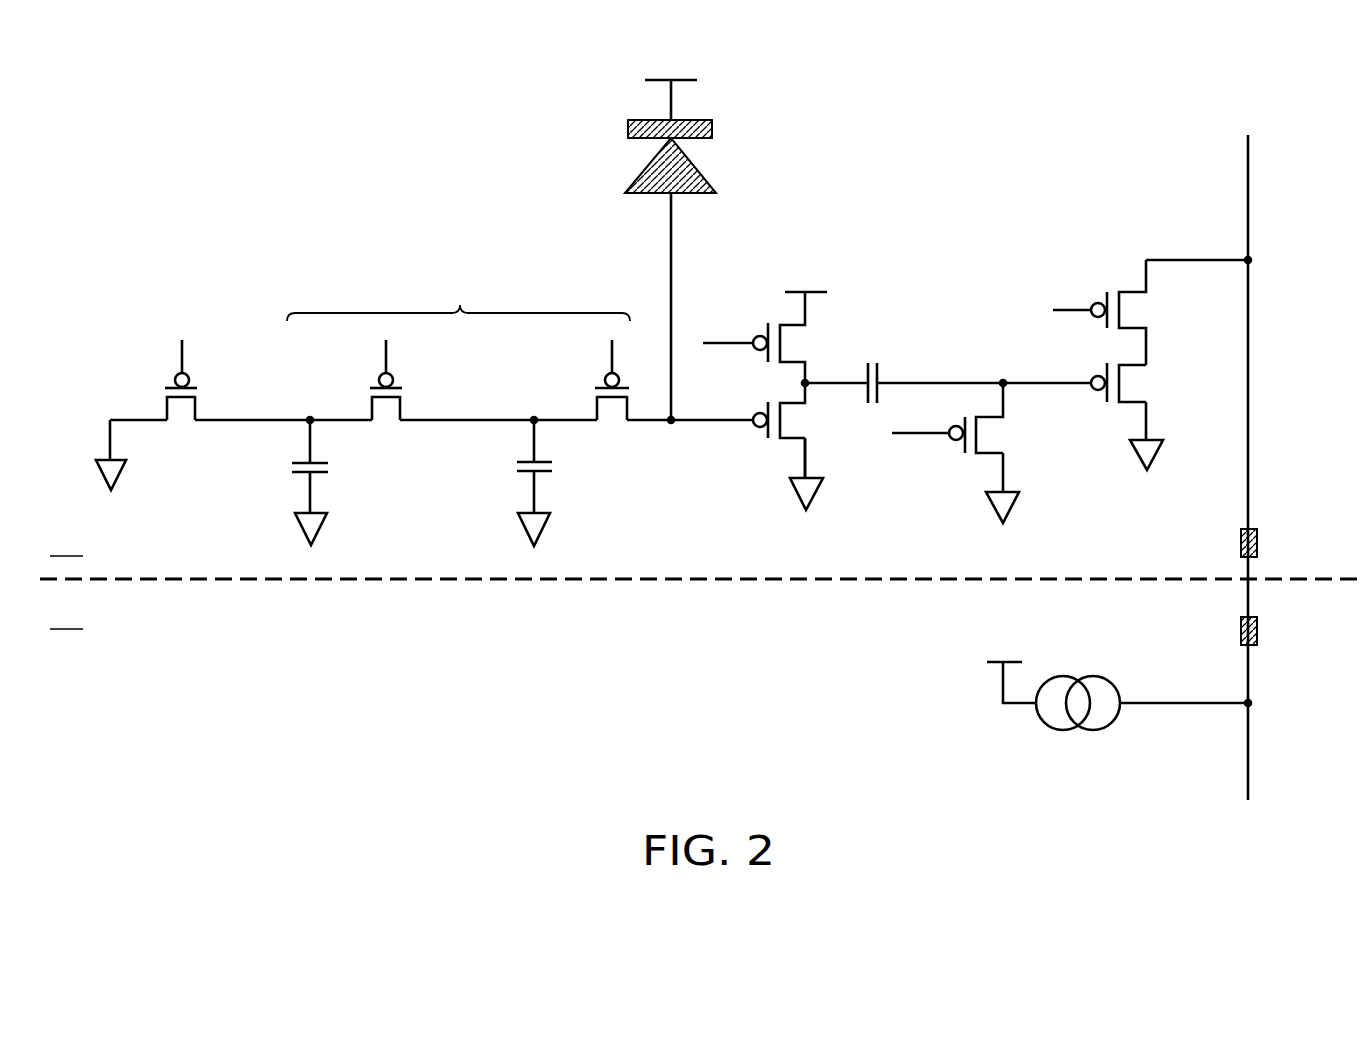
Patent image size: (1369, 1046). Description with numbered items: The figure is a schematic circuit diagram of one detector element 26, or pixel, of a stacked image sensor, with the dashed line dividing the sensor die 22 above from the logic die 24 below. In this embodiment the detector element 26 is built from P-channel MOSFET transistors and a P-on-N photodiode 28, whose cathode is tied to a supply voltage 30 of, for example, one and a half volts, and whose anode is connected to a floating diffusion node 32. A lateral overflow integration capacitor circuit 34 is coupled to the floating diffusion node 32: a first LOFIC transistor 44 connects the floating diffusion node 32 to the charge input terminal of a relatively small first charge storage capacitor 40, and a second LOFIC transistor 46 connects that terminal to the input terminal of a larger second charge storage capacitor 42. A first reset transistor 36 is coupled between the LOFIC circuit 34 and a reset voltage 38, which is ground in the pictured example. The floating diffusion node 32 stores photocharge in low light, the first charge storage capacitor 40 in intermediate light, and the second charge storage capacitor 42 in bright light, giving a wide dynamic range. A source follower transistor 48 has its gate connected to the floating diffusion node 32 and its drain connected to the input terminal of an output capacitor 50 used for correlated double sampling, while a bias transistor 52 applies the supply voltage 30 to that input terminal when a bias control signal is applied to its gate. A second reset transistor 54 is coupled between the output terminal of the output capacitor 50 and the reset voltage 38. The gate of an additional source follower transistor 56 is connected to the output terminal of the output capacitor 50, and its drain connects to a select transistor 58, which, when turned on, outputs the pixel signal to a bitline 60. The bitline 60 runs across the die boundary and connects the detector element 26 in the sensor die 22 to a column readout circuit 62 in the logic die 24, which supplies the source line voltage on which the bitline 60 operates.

The sensor die 22 is at (66, 544).
The logic die 24 is at (66, 617).
The detector element 26 is at (288, 184).
The photodiode 28 is at (630, 188).
The supply voltage 30 is at (648, 80).
The floating diffusion node 32 is at (670, 426).
The lateral overflow integration capacitor circuit 34 is at (458, 297).
The first reset transistor 36 is at (167, 400).
The reset voltage 38 is at (98, 464).
The first charge storage capacitor 40 is at (518, 472).
The second charge storage capacitor 42 is at (294, 472).
The first LOFIC transistor 44 is at (597, 410).
The second LOFIC transistor 46 is at (400, 410).
The source follower transistor 48 is at (790, 401).
The output capacitor 50 is at (880, 366).
The bias transistor 52 is at (788, 320).
The second reset transistor 54 is at (988, 458).
The additional source follower transistor 56 is at (1124, 363).
The select transistor 58 is at (1128, 292).
The bitline 60 is at (1248, 178).
The column readout circuit 62 is at (1050, 727).